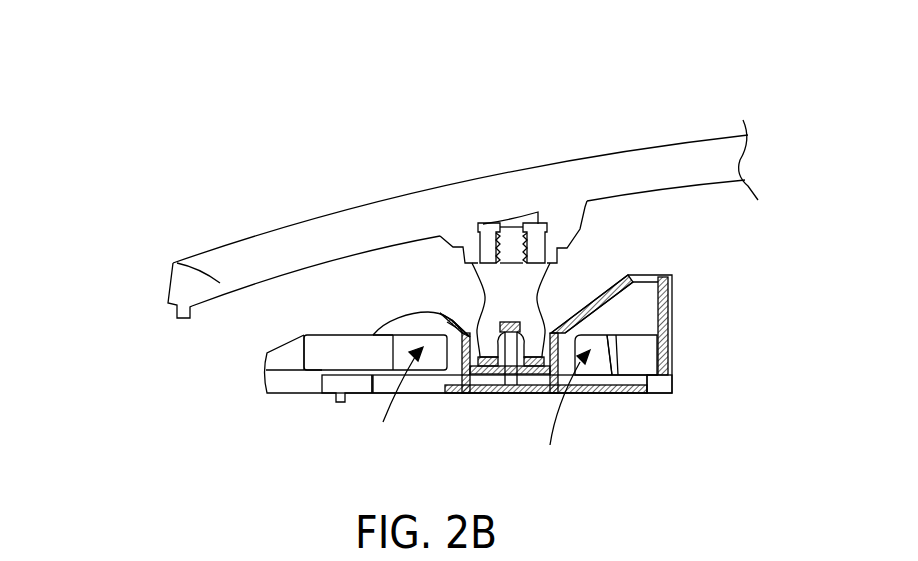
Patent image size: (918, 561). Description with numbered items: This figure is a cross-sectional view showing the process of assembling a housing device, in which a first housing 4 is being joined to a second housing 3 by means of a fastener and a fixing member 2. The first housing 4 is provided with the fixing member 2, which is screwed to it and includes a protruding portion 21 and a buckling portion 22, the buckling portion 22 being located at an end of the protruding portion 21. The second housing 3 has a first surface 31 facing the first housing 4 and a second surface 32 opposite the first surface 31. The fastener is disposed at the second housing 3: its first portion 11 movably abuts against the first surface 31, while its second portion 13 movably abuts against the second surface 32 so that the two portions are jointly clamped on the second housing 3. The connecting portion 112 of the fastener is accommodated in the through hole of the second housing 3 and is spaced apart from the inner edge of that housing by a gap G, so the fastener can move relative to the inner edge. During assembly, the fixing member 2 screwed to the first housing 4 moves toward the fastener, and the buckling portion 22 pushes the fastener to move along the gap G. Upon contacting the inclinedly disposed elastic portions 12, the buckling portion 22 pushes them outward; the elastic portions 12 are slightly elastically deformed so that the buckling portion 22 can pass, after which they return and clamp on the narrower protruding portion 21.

The fixing member 2 is at (615, 75).
The protruding portion 21 is at (508, 290).
The buckling portion 22 is at (540, 316).
The second housing 3 is at (271, 360).
The first surface 31 is at (327, 333).
The second surface 32 is at (267, 375).
The first housing 4 is at (172, 263).
The first portion 11 is at (408, 322).
The elastic portions 12 is at (462, 332).
The second portion 13 is at (377, 382).
The connecting portion 112 is at (520, 362).
The gap G is at (476, 413).